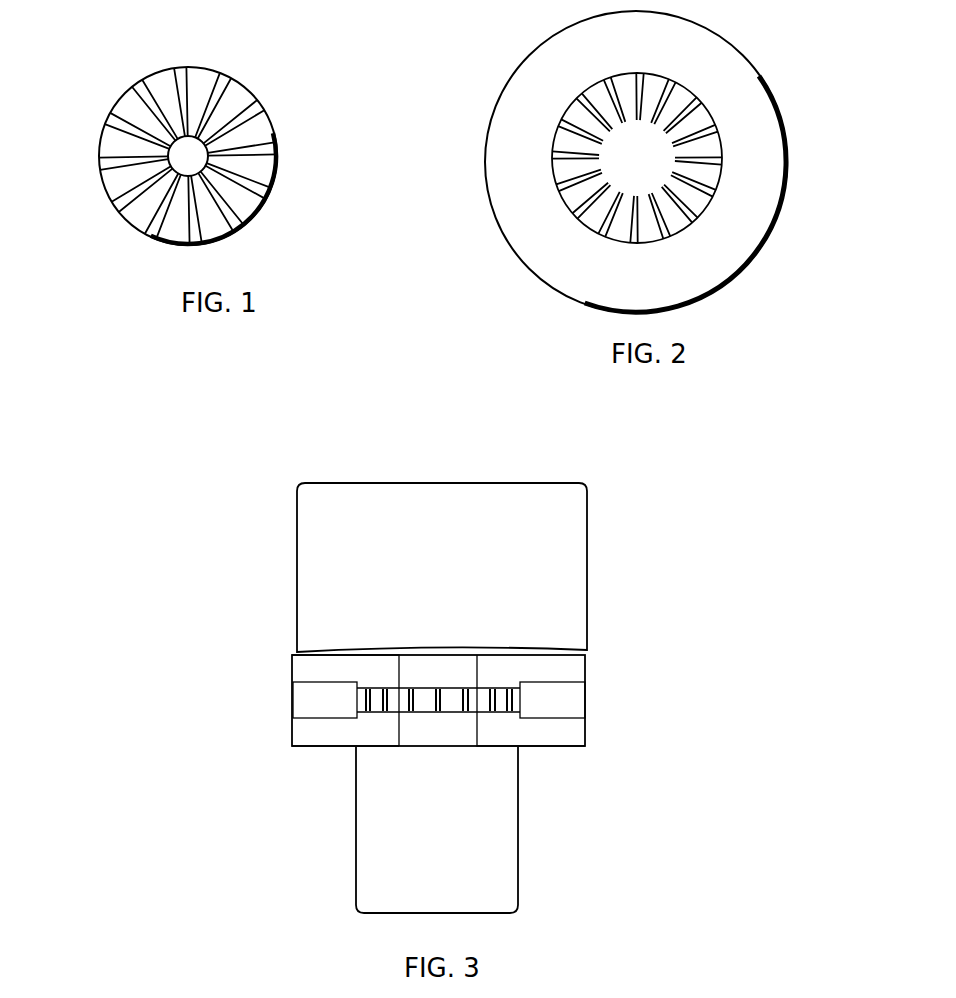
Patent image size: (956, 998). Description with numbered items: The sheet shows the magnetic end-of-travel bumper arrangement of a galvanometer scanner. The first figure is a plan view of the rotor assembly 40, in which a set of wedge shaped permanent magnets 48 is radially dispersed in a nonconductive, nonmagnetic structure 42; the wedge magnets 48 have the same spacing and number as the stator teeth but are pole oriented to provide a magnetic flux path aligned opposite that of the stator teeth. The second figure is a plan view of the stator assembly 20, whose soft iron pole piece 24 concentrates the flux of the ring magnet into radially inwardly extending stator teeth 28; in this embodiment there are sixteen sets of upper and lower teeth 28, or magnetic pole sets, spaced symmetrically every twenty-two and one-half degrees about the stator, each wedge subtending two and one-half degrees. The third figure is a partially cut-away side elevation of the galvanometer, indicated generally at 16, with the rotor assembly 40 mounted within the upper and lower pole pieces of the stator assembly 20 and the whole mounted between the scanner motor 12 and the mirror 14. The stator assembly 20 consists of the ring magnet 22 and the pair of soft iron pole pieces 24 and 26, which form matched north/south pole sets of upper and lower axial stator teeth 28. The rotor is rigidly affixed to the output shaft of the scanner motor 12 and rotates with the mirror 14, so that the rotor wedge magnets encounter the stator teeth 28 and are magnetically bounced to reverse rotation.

In FIG. 3, the scanner motor 12 is at (356, 834).
In FIG. 3, the mirror 14 is at (296, 547).
In FIG. 3, the assembly 16 is at (693, 500).
In FIG. 2, the stator assembly 20 is at (857, 137).
In FIG. 3, the stator assembly 20 is at (586, 727).
In FIG. 3, the ring magnet 22 is at (292, 697).
In FIG. 2, the pole piece 24 is at (760, 75).
In FIG. 3, the pole piece 24 is at (292, 669).
In FIG. 3, the pole piece 26 is at (292, 729).
In FIG. 2, the stator teeth 28 is at (588, 112).
In FIG. 3, the stator teeth 28 is at (490, 654).
In FIG. 1, the rotor assembly 40 is at (87, 68).
In FIG. 3, the rotor assembly 40 is at (427, 697).
In FIG. 1, the nonconductive, nonmagnetic structure 42 is at (241, 212).
In FIG. 1, the wedge shaped permanent magnets 48 is at (244, 91).